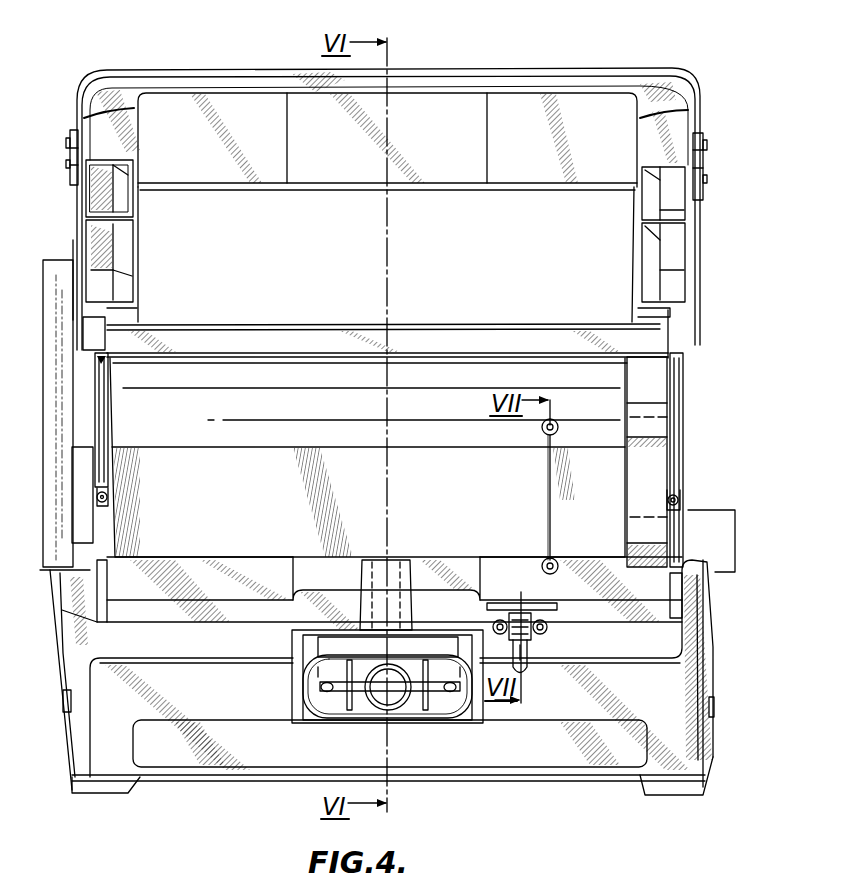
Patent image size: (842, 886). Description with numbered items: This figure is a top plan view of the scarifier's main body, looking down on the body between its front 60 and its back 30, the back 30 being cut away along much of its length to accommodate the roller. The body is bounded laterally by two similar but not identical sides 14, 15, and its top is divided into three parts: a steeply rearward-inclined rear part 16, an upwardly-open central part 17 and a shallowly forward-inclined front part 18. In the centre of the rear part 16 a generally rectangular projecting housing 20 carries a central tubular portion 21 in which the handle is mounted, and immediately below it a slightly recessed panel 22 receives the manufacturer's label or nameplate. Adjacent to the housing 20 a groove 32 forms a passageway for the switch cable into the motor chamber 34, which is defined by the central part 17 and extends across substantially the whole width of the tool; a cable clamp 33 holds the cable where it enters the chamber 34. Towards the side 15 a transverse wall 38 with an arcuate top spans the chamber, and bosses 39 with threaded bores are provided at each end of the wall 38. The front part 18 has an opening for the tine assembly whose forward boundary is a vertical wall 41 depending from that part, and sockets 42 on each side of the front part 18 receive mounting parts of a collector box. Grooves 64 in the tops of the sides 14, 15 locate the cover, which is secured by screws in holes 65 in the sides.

The side 14 is at (62, 250).
The side 15 is at (674, 343).
The rear part 16 is at (235, 684).
The upwardly-open central part 17 is at (596, 505).
The front part 18 is at (558, 115).
The projecting housing 20 is at (467, 716).
The central tubular portion 21 is at (372, 607).
The recessed panel 22 is at (348, 761).
The back 30 is at (232, 780).
The groove 32 is at (525, 650).
The cable clamp 33 is at (530, 640).
The motor chamber 34 is at (280, 524).
The transverse wall 38 is at (548, 474).
The bosses 39 is at (560, 428).
The vertical wall 41 is at (366, 190).
The sockets 42 is at (103, 200).
The front 60 is at (208, 70).
The grooves 64 is at (104, 420).
The holes 65 is at (108, 497).